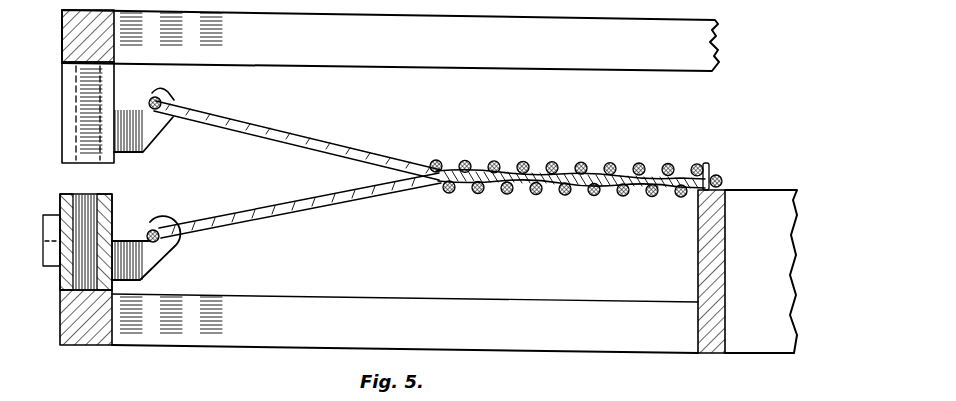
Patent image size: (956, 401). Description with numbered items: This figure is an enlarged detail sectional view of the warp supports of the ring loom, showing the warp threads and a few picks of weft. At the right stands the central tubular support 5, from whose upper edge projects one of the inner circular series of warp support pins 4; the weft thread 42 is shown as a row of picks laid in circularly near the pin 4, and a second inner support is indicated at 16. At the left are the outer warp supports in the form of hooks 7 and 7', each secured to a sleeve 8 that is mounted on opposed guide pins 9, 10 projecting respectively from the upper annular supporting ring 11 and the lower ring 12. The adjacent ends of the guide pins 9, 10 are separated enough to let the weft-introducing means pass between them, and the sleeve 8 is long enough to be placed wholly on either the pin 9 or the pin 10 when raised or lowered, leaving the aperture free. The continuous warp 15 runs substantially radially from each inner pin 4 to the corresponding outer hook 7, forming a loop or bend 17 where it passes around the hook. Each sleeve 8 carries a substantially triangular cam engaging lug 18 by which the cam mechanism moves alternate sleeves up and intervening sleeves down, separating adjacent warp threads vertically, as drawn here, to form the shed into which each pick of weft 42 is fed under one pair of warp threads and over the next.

The warp support pin 4 is at (710, 175).
The tubular support 5 is at (708, 253).
The hook 7 is at (146, 252).
The upper hook bracket 7' is at (153, 121).
The sleeve 8 is at (68, 108).
The guide pin 9 is at (100, 97).
The guide pin 10 is at (62, 290).
The upper annular supporting ring 11 is at (392, 55).
The lower annular supporting ring 12 is at (416, 305).
The warp 15 is at (300, 152).
The end ball 16 is at (723, 185).
The loop or bend 17 is at (149, 231).
The cam engaging lug 18 is at (47, 252).
The weft thread 42 is at (521, 162).